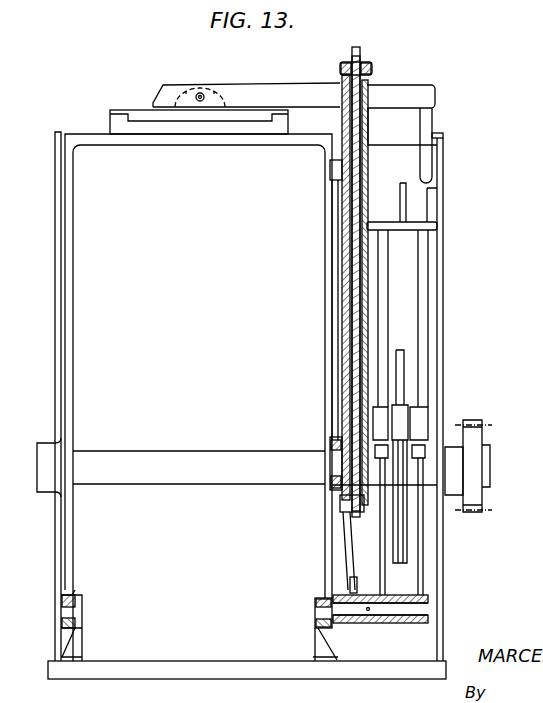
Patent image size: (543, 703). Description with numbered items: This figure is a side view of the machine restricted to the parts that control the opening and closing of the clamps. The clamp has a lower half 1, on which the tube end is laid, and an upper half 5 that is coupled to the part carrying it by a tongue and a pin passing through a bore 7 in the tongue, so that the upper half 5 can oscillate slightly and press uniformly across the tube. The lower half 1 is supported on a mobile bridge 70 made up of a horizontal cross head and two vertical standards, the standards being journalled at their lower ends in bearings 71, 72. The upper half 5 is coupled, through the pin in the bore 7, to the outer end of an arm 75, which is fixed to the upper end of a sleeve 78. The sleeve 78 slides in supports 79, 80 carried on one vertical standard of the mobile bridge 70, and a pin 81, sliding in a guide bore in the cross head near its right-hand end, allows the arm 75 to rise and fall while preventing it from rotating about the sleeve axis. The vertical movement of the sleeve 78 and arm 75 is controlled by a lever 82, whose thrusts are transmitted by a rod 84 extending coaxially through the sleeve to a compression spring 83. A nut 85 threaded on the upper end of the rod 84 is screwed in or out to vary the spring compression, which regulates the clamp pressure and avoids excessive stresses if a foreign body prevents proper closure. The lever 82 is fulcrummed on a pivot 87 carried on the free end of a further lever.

The lower half of the clamp 1 is at (288, 125).
The upper half of the clamp 5 is at (160, 117).
The bore in the tongue 7 is at (203, 95).
The mobile bridge 70 is at (172, 142).
The bearing 71 is at (62, 603).
The bearing 72 is at (320, 607).
The arm 75 is at (262, 91).
The sleeve 78 is at (363, 176).
The support 79 is at (367, 144).
The support 80 is at (338, 430).
The pin 81 is at (432, 124).
The lever 82 is at (346, 545).
The compression spring 83 is at (344, 178).
The rod 84 is at (361, 55).
The nut 85 is at (366, 70).
The pivot 87 is at (430, 611).